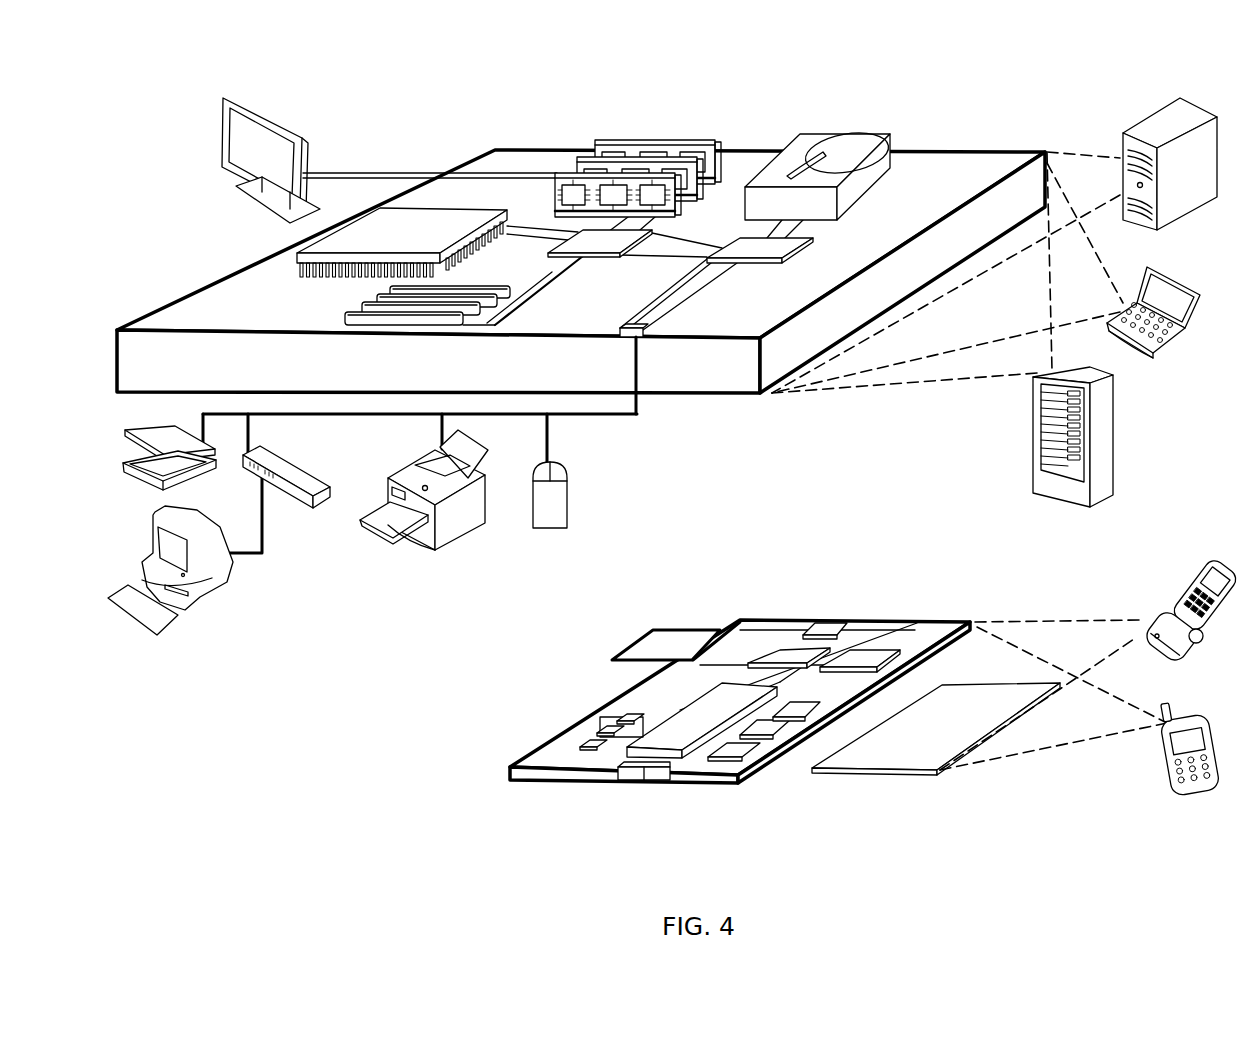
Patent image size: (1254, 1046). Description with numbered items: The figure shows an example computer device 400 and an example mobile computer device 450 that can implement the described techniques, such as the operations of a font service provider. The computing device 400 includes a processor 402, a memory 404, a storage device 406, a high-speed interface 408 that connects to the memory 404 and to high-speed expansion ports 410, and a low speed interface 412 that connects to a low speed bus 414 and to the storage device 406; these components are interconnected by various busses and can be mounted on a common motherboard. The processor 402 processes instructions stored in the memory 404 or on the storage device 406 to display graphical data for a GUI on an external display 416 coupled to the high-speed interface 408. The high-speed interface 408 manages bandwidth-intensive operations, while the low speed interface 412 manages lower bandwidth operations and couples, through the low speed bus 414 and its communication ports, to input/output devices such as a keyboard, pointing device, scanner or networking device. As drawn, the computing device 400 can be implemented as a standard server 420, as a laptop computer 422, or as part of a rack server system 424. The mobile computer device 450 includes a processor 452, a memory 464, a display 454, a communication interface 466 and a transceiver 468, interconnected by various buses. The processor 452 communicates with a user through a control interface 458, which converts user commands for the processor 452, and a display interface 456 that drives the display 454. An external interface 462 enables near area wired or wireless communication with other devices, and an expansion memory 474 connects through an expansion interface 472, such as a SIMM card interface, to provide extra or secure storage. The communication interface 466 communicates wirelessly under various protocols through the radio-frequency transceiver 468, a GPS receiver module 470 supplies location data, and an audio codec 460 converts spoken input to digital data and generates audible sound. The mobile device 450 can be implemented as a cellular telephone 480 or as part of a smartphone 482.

The computing device 400 is at (417, 117).
The processor 402 is at (297, 260).
The memory 404 is at (608, 138).
The storage device 406 is at (828, 130).
The high-speed interface 408 is at (580, 243).
The high-speed expansion ports 410 is at (365, 300).
The low speed interface 412 is at (760, 247).
The low speed bus 414 is at (648, 338).
The display 416 is at (222, 100).
The standard server 420 is at (1120, 134).
The laptop computer 422 is at (1147, 270).
The rack server system 424 is at (1033, 457).
The mobile computer device 450 is at (720, 596).
The processor 452 is at (672, 780).
The display 454 is at (938, 775).
The display interface 456 is at (750, 773).
The control interface 458 is at (780, 737).
The audio codec 460 is at (797, 719).
The external interface 462 is at (643, 782).
The memory 464 is at (597, 733).
The communication interface 466 is at (788, 657).
The transceiver 468 is at (863, 657).
The GPS receiver module 470 is at (825, 628).
The expansion interface 472 is at (718, 630).
The expansion memory 474 is at (653, 630).
The cellular telephone 480 is at (1193, 567).
The smartphone 482 is at (1174, 699).